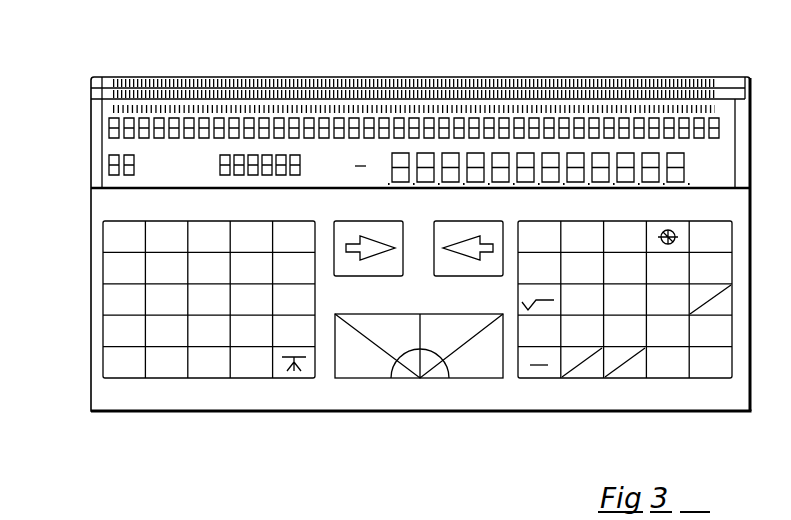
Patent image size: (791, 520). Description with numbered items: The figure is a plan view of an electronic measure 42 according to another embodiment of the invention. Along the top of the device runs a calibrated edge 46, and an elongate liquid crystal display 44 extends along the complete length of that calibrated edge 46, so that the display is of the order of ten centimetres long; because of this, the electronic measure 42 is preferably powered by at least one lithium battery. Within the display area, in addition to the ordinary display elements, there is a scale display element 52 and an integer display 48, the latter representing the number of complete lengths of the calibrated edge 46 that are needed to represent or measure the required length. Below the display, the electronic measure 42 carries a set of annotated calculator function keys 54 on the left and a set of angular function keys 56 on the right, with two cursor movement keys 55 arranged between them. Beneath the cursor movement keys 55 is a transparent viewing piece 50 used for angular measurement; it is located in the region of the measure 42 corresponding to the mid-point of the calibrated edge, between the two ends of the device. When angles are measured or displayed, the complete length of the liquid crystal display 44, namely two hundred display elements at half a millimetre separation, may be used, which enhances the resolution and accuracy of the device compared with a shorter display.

The electronic measure 42 is at (73, 132).
The liquid crystal display 44 is at (150, 115).
The calibrated edge 46 is at (243, 79).
The integer display 48 is at (116, 179).
The transparent viewing piece 50 is at (455, 378).
The scale display element 52 is at (274, 149).
The calculator function keys 54 is at (215, 420).
The cursor movement keys 55 is at (445, 278).
The angular function keys 56 is at (609, 386).